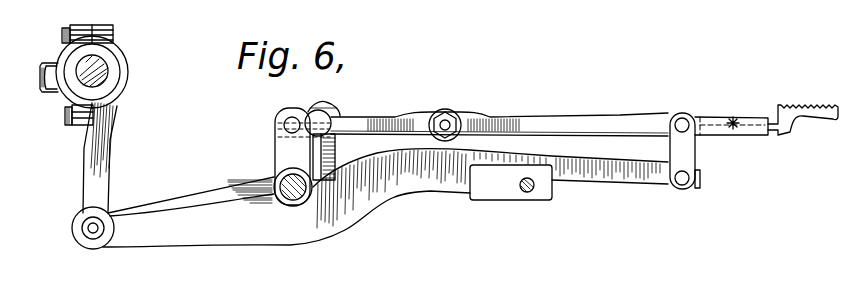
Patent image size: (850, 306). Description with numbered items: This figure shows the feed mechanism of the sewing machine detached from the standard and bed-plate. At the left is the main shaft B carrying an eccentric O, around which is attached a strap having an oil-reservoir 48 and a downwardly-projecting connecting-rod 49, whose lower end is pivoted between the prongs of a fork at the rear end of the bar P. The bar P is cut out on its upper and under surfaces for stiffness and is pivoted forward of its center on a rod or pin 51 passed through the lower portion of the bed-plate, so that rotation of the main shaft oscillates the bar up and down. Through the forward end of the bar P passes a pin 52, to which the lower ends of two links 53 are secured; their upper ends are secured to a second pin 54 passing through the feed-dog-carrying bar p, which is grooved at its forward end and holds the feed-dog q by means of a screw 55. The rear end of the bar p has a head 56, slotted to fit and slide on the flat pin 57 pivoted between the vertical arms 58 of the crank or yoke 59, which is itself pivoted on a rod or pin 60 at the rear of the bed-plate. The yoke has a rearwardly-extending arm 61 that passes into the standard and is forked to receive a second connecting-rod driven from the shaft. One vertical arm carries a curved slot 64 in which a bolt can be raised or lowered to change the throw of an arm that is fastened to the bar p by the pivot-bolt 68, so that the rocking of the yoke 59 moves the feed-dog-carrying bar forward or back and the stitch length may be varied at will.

The main shaft B is at (103, 70).
The eccentric O is at (112, 87).
The oil-reservoir 48 is at (45, 88).
The connecting-rod 49 is at (95, 177).
The bar P is at (426, 182).
The feed-dog-carrying bar p is at (592, 123).
The rod or pin 51 is at (527, 192).
The pin 52 is at (683, 182).
The links 53 is at (687, 153).
The second pin 54 is at (685, 118).
The screw 55 is at (737, 117).
The head 56 is at (325, 119).
The flat pin 57 is at (284, 124).
The vertical arms 58 is at (277, 152).
The crank or yoke 59 is at (250, 181).
The rod or pin 60 is at (300, 195).
The rearwardly-extending arm 61 is at (197, 202).
The curved slot 64 is at (341, 157).
The pivot-bolt 68 is at (450, 122).
The feed-dog q is at (805, 110).